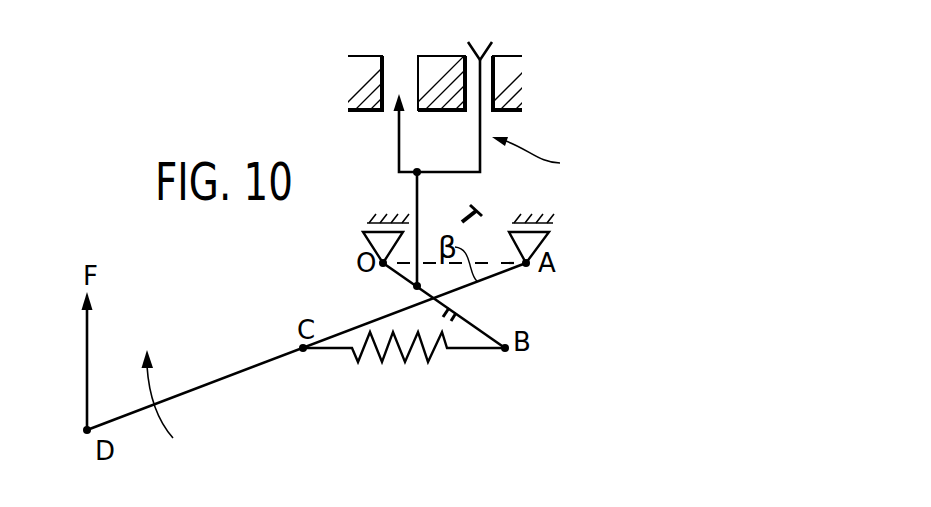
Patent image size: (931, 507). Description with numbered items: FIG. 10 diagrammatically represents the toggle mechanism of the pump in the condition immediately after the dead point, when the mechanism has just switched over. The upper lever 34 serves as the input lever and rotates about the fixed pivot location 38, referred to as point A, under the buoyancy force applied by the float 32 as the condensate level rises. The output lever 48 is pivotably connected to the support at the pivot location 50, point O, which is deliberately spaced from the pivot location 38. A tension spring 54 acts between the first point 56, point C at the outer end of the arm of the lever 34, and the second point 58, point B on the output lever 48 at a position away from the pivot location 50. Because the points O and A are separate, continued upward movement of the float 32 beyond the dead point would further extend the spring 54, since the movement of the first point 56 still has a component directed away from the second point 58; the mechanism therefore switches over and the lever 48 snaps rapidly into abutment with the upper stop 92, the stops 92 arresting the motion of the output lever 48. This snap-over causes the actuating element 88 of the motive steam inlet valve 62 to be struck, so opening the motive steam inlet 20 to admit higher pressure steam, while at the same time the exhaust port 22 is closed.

The motive steam inlet 20 is at (493, 45).
The exhaust port 22 is at (395, 62).
The float 32 is at (82, 432).
The upper lever 34 is at (238, 378).
The pivot location 38 is at (528, 267).
The output lever 48 is at (480, 327).
The pivot location 50 is at (374, 283).
The tension spring 54 is at (378, 362).
The first point 56 is at (303, 352).
The second point 58 is at (505, 352).
The motive steam inlet valve 62 is at (540, 158).
The actuating element 88 is at (417, 192).
The stop 92 is at (480, 221).